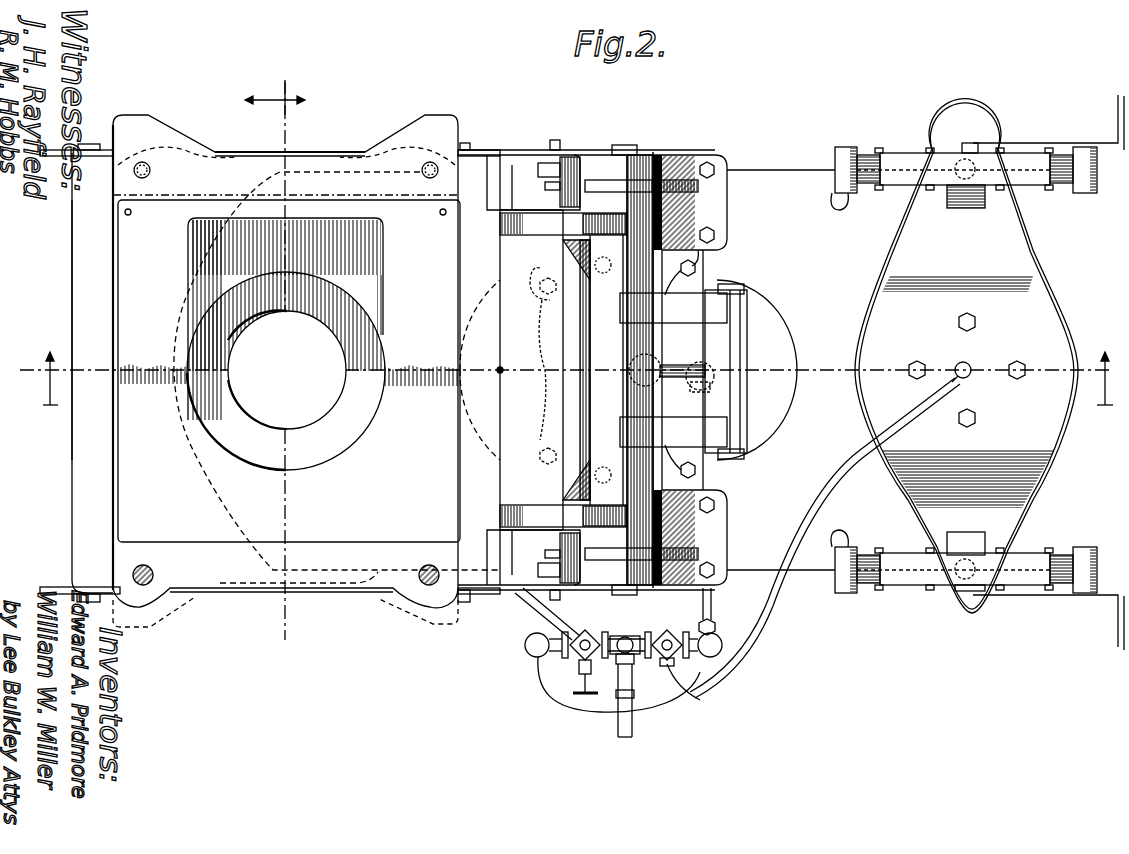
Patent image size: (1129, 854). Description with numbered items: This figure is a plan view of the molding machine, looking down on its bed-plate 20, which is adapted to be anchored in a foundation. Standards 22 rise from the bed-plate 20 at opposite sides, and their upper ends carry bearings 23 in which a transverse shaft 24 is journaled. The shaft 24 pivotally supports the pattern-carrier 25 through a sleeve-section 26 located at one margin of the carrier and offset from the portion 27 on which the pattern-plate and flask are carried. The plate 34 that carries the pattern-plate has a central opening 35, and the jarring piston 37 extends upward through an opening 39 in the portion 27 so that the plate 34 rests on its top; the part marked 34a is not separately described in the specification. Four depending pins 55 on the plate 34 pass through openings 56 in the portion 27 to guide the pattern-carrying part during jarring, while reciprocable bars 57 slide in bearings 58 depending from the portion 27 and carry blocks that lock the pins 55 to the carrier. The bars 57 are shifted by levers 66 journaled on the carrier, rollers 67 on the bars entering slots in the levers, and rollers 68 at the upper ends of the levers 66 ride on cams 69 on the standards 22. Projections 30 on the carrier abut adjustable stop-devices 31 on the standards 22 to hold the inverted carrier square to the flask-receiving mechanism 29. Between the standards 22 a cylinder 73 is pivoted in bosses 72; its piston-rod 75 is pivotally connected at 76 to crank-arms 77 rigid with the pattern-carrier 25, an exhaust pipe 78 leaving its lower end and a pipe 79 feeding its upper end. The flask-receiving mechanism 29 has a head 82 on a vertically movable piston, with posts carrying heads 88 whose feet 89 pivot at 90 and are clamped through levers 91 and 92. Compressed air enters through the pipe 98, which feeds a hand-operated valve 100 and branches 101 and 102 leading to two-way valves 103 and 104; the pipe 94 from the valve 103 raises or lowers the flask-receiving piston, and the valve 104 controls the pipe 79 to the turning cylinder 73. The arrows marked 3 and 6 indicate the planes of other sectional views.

The section line 3- 3 is at (60, 372).
The section line 6- 6 is at (275, 87).
The bed-plate 20 is at (781, 370).
The standards 22 is at (700, 165).
The bearings 23 is at (656, 160).
The shaft 24 is at (622, 146).
The pattern-carrier 25 is at (92, 359).
The sleeve-section 26 is at (601, 370).
The portion of the pattern-carrier 27 is at (72, 326).
The flask-receiving mechanism 29 is at (978, 356).
The projections 30 is at (602, 222).
The adjustable stop-devices 31 is at (690, 232).
The plate 34 is at (286, 361).
The plate flange 34a is at (145, 125).
The opening 35 is at (264, 225).
The piston 37 is at (286, 371).
The opening 39 is at (222, 555).
The depending pins 55 is at (152, 172).
The openings 56 is at (155, 575).
The reciprocable bars 57 is at (252, 152).
The bearings 58 is at (85, 146).
The levers 66 is at (545, 170).
The rollers 67 is at (556, 142).
The rollers 68 is at (580, 538).
The cams 69 is at (641, 360).
The bosses 72 is at (575, 258).
The cylinder 73 is at (570, 452).
The piston-rod 75 is at (686, 366).
The pivotal connection 76 is at (725, 455).
The crank-arms 77 is at (673, 370).
The exhaust pipe 78 is at (502, 370).
The pipe 79 is at (713, 610).
The head 82 is at (968, 392).
The head 88 is at (955, 369).
The feet 89 is at (845, 150).
The pivot 90 is at (888, 150).
The lever 91 is at (1030, 142).
The lever 92 is at (972, 145).
The pipe 94 is at (820, 506).
The pipe 98 is at (630, 725).
The hand-operated valve 100 is at (578, 678).
The branch 101 is at (624, 636).
The branch 102 is at (648, 632).
The two-way valve 103 is at (590, 632).
The two-way valve 104 is at (675, 690).